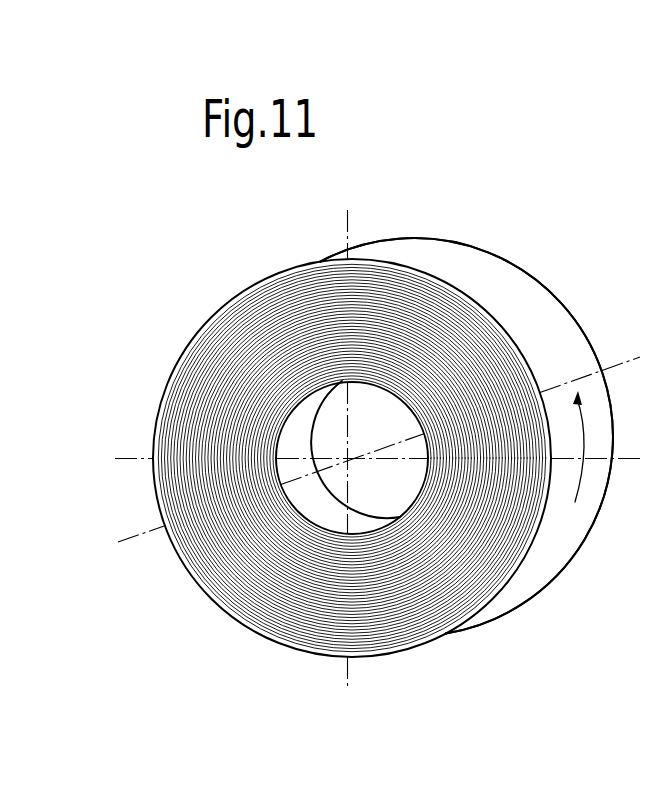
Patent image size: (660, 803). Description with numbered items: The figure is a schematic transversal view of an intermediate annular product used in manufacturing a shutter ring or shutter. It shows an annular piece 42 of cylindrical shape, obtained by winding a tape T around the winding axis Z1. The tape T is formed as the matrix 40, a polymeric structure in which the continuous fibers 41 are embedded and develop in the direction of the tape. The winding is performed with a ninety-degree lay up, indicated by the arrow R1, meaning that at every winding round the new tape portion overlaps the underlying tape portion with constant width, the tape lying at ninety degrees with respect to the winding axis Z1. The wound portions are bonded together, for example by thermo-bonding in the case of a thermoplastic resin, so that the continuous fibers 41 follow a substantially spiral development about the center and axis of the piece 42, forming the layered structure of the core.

The matrix 40 is at (401, 308).
The continuous fibers 41 is at (208, 397).
The annular piece 42 is at (512, 249).
The tape T is at (520, 288).
The arrow indicating the ninety-degree lay up R1 is at (583, 440).
The winding axis Z1 is at (135, 535).